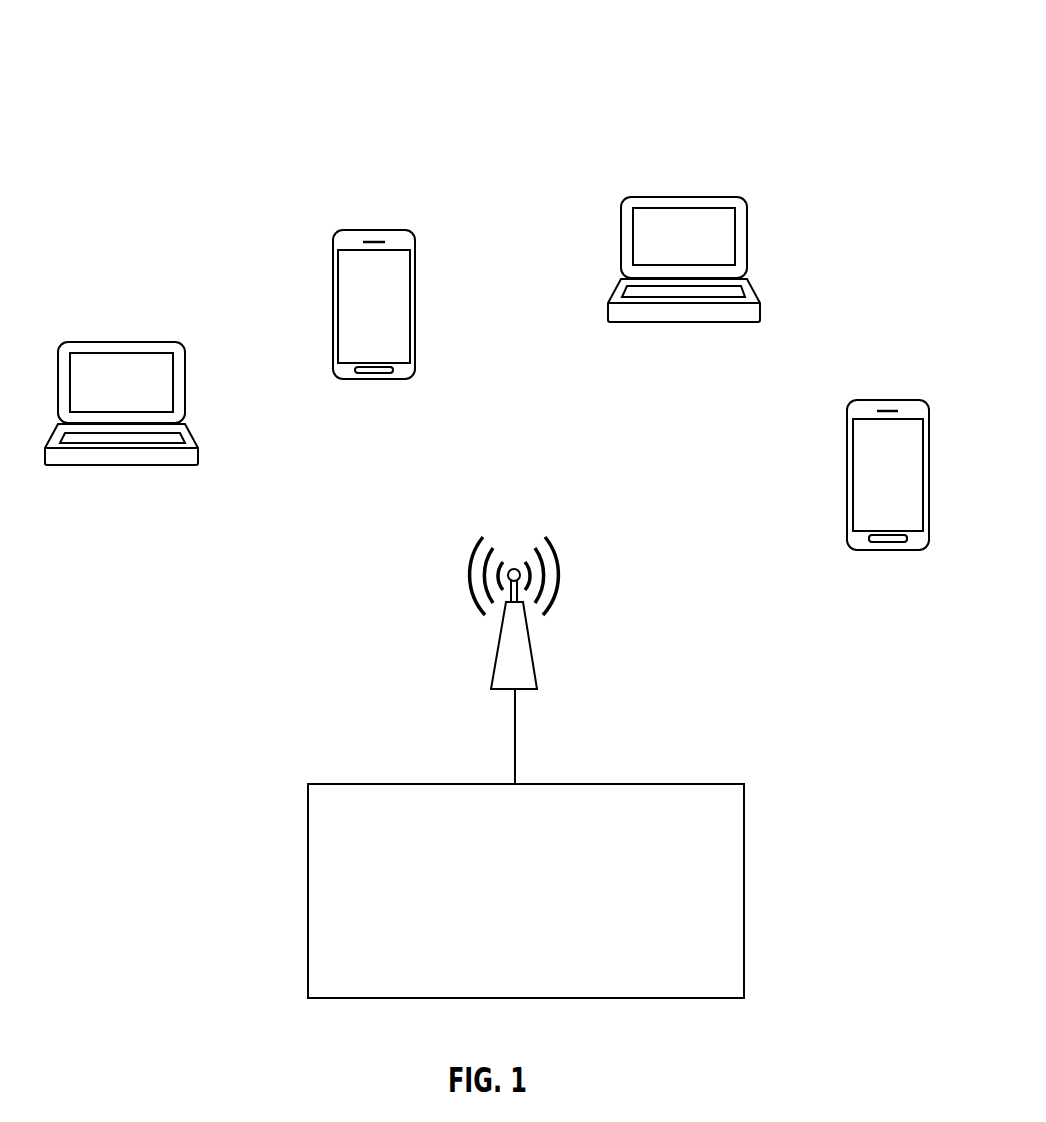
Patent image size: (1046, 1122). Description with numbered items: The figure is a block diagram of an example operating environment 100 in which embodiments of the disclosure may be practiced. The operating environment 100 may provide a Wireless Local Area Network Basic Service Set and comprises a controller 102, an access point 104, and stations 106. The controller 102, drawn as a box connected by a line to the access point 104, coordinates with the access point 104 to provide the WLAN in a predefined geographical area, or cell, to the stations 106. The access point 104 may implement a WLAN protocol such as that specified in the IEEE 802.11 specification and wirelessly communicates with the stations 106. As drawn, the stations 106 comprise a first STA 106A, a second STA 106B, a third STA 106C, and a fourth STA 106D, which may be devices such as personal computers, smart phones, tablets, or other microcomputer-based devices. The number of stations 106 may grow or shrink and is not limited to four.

The operating environment 100 is at (122, 41).
The controller 102 is at (355, 784).
The access point 104 is at (497, 655).
The stations 106 is at (239, 139).
The first STA 106A is at (186, 381).
The second STA 106B is at (333, 288).
The third STA 106C is at (748, 243).
The fourth STA 106D is at (847, 474).